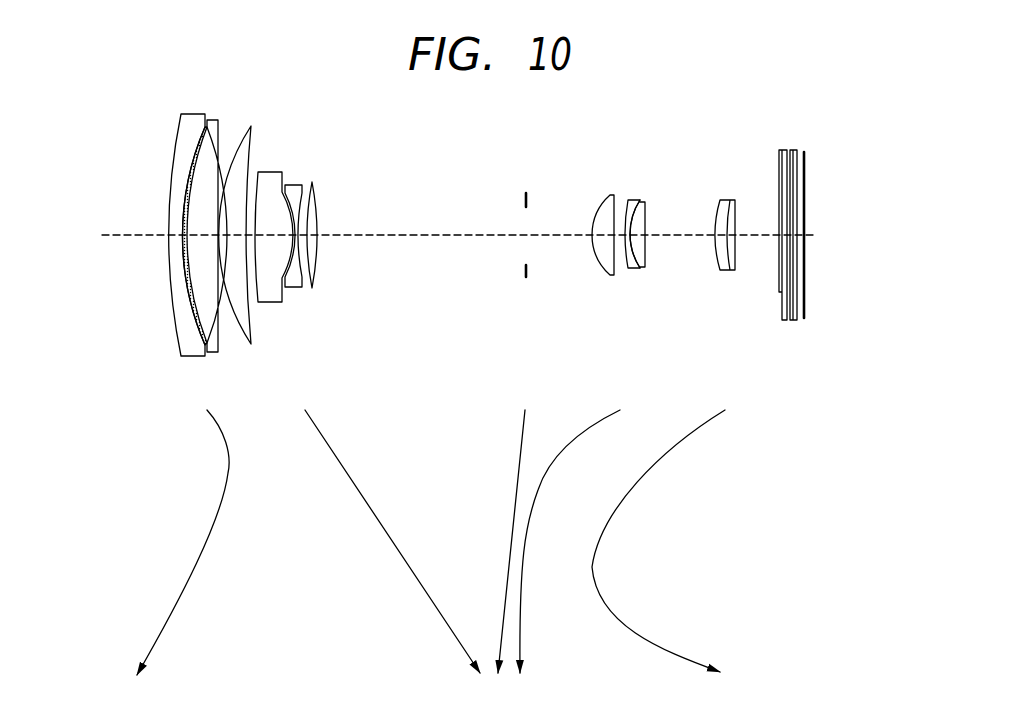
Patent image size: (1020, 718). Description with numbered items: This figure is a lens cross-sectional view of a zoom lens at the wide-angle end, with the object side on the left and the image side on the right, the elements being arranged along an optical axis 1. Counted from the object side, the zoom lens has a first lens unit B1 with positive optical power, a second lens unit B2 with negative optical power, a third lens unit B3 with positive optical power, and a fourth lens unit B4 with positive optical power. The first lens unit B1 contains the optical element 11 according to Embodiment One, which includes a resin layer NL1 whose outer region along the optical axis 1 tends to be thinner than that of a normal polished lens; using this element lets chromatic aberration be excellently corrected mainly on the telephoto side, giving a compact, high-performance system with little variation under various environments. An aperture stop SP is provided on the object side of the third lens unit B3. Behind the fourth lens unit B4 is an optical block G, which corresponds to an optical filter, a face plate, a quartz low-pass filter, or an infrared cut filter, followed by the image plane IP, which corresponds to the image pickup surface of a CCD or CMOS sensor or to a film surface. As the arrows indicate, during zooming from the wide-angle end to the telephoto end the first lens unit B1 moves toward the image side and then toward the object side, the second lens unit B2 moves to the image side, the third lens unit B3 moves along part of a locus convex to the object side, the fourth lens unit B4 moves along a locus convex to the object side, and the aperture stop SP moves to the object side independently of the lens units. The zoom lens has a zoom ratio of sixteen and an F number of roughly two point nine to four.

The optical axis 1 is at (137, 236).
The optical element 11 is at (233, 211).
The resin layer NL1 is at (200, 153).
The first lens unit B1 is at (217, 370).
The second lens unit B2 is at (263, 360).
The aperture stop SP is at (524, 198).
The third lens unit B3 is at (592, 283).
The fourth lens unit B4 is at (705, 283).
The optical block G is at (777, 145).
The image plane IP is at (806, 172).